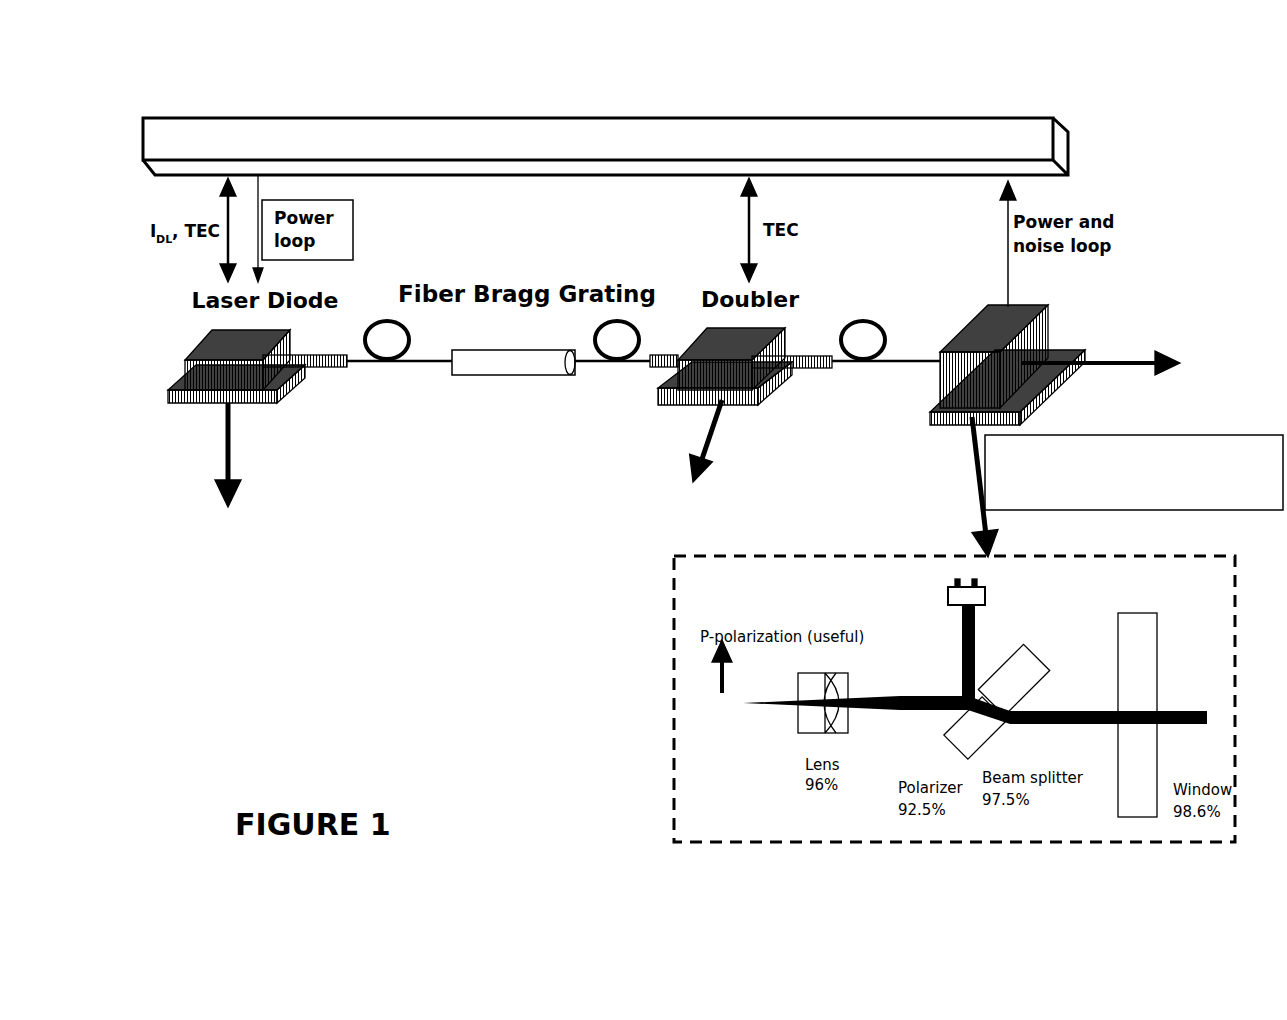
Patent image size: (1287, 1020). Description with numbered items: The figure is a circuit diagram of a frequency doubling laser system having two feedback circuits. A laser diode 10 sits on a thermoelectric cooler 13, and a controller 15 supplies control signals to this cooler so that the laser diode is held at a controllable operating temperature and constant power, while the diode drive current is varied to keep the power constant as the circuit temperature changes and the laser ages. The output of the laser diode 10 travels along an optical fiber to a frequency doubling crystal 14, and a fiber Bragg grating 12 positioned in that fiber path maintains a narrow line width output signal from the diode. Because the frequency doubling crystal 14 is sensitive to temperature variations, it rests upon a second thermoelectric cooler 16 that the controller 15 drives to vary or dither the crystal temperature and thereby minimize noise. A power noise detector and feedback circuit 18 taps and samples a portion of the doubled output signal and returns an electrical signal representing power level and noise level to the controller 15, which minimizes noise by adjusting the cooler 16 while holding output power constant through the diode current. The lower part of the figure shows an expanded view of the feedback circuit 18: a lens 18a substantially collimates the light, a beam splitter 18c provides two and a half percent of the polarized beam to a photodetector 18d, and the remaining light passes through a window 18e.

The laser diode 10 is at (290, 348).
The fiber Bragg grating 12 is at (515, 369).
The thermoelectric cooler 13 is at (191, 396).
The frequency doubling crystal 14 is at (757, 337).
The controller 15 is at (1026, 124).
The thermoelectric cooler 16 is at (758, 400).
The power noise detector and feedback circuit 18 is at (1043, 329).
The lens 18a is at (806, 673).
The beam splitter 18c is at (1028, 660).
The photodetector 18d is at (977, 596).
The window 18e is at (1143, 657).